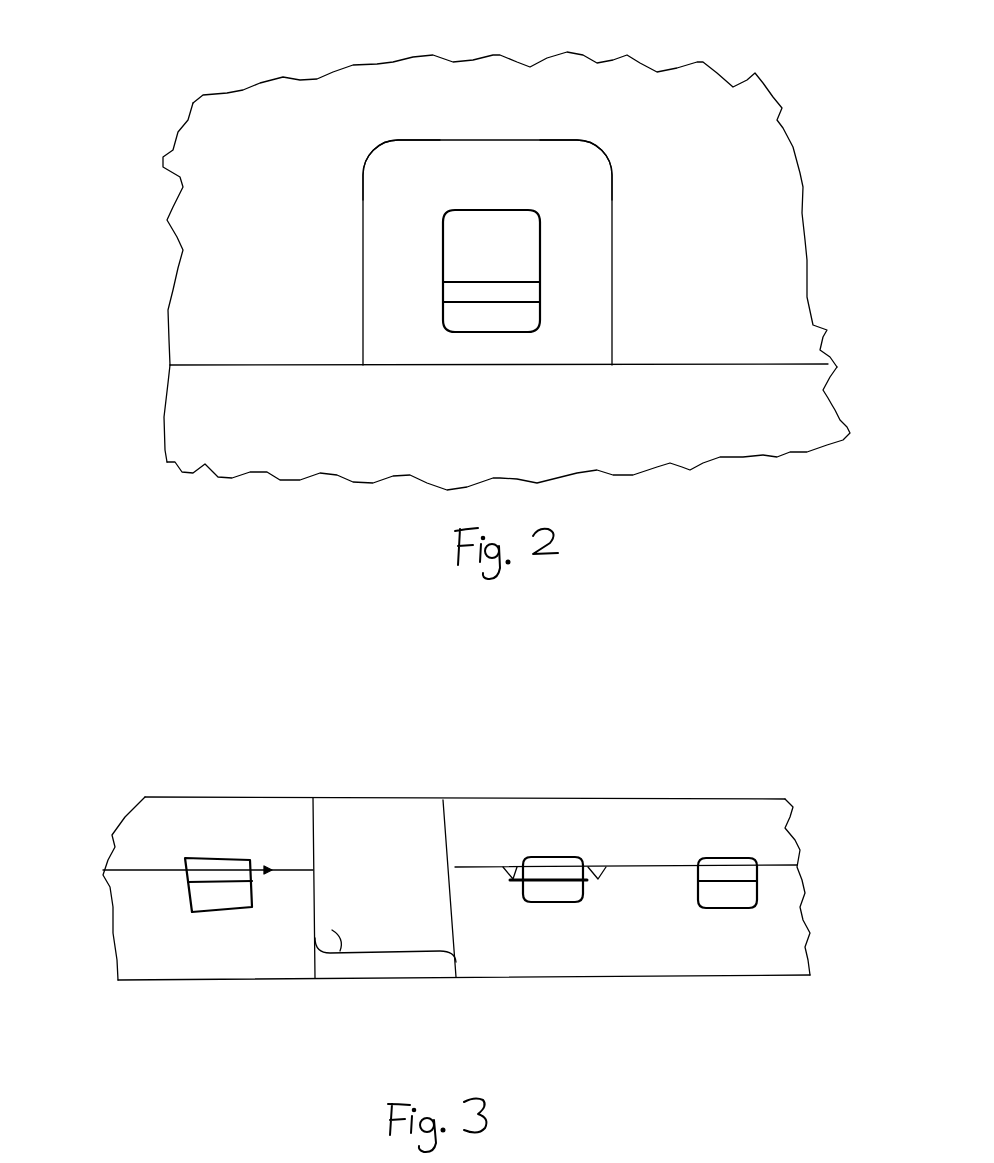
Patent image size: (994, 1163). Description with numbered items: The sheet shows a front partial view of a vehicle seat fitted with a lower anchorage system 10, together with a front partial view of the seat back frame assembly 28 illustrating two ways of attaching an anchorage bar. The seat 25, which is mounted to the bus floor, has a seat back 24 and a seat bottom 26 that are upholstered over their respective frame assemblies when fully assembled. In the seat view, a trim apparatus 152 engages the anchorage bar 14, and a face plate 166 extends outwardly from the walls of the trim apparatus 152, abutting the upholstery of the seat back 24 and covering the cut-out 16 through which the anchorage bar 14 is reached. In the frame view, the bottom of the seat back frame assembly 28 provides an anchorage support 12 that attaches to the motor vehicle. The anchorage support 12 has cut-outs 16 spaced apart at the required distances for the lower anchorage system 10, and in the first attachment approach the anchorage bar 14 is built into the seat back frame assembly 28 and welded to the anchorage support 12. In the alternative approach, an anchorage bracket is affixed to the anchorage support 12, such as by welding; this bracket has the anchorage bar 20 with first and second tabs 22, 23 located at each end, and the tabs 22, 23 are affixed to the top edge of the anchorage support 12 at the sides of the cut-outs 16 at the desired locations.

In FIG. 2, the lower anchorage system 10 is at (387, 233).
In FIG. 2, the trim apparatus 152 is at (403, 178).
In FIG. 2, the face plate 166 is at (582, 188).
In FIG. 2, the seat back 24 is at (755, 175).
In FIG. 2, the anchorage bar 14 is at (520, 288).
In FIG. 3, the anchorage bar 14 is at (723, 863).
In FIG. 2, the seat 25 is at (207, 408).
In FIG. 2, the seat bottom 26 is at (758, 415).
In FIG. 3, the anchorage support 12 is at (778, 942).
In FIG. 3, the anchorage bar 20 is at (540, 858).
In FIG. 3, the cut-outs 16 is at (762, 890).
In FIG. 3, the first tab 22 is at (513, 883).
In FIG. 3, the second tab 23 is at (605, 880).
In FIG. 3, the seat back frame assembly 28 is at (320, 968).